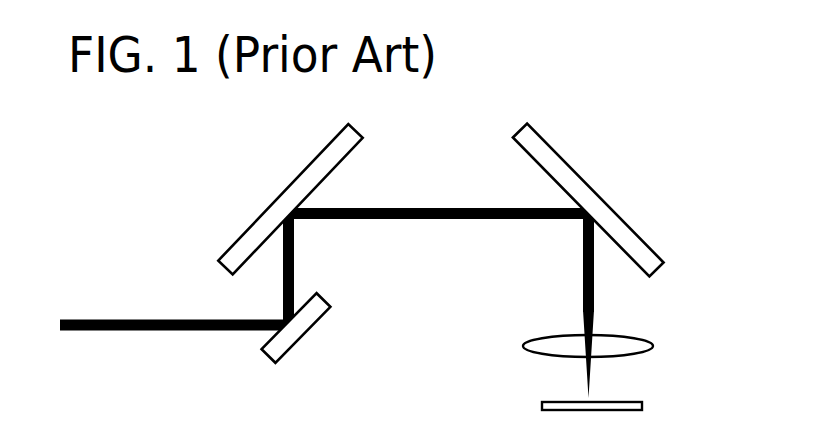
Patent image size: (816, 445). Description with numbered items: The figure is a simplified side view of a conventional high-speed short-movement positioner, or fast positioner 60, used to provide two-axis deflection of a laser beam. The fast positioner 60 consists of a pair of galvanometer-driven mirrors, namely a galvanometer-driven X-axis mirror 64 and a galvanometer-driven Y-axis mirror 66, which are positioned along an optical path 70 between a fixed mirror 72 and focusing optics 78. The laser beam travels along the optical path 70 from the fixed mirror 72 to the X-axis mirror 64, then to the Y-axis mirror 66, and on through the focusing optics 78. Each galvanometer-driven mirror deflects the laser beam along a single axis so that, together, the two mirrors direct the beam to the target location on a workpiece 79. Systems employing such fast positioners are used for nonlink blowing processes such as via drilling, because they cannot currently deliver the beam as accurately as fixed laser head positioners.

The fast positioner 60 is at (683, 153).
The galvanometer-driven X-axis mirror 64 is at (295, 182).
The galvanometer-driven Y-axis mirror 66 is at (583, 178).
The optical path 70 is at (433, 208).
The fixed mirror 72 is at (317, 318).
The focusing optics 78 is at (628, 335).
The workpiece 79 is at (625, 402).